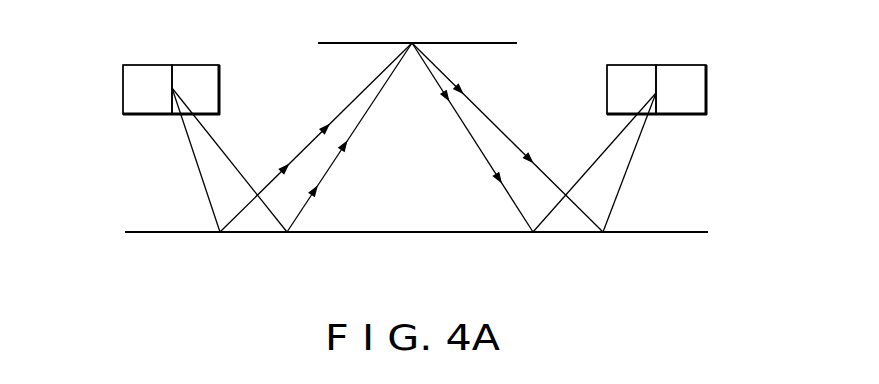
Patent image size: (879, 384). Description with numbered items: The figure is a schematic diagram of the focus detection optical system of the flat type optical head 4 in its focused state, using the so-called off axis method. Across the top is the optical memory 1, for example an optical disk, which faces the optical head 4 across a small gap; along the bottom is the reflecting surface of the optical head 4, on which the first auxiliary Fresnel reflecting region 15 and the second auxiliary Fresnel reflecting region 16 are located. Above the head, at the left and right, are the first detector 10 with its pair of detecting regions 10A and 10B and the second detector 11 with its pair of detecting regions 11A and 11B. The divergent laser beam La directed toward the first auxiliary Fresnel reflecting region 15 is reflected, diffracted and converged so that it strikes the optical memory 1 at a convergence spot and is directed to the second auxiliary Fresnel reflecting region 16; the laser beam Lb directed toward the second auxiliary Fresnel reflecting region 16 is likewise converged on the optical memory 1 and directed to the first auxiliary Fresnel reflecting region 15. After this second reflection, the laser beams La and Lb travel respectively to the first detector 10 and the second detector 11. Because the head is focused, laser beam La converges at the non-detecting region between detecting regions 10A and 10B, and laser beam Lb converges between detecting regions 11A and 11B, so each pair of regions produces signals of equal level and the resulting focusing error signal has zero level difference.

The optical memory 1 is at (481, 42).
The flat type optical head 4 is at (664, 237).
The first detector 10 is at (112, 51).
The detecting region 10A is at (150, 67).
The detecting region 10B is at (204, 67).
The second detector 11 is at (708, 52).
The detecting region 11A is at (632, 67).
The detecting region 11B is at (682, 67).
The first auxiliary Fresnel reflecting region 15 is at (251, 236).
The second auxiliary Fresnel reflecting region 16 is at (569, 236).
The laser beam La is at (323, 160).
The laser beam Lb is at (494, 152).